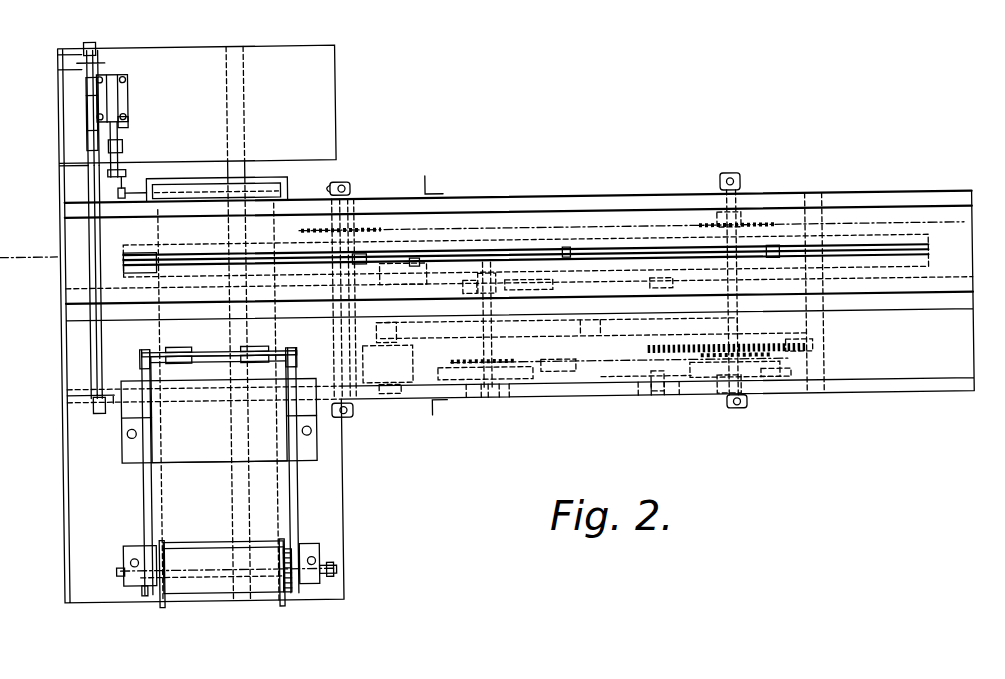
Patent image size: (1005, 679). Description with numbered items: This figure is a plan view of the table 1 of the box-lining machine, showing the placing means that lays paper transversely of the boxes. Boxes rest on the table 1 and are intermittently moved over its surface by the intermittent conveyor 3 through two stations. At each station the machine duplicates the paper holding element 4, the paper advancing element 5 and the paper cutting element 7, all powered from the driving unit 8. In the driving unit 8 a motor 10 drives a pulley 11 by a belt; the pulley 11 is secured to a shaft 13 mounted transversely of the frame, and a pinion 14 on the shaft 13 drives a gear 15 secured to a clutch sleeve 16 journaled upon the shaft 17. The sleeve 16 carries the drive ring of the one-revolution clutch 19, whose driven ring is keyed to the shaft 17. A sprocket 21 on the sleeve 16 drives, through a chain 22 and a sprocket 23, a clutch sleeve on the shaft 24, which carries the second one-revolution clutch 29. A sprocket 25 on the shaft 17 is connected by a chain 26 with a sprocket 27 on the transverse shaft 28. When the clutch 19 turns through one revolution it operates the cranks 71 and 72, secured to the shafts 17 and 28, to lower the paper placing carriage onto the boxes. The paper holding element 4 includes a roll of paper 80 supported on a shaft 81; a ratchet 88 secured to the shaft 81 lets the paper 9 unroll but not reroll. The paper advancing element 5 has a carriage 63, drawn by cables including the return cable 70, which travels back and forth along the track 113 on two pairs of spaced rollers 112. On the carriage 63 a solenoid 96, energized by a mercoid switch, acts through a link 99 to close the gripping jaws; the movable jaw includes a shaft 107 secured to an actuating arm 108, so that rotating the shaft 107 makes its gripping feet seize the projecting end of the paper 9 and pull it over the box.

The table 1 is at (901, 197).
The intermittent conveyor 3 is at (834, 252).
The paper holding element 4 is at (216, 583).
The paper advancing element 5 is at (131, 126).
The paper cutting element 7 is at (214, 351).
The driving unit 8 is at (782, 371).
The paper 9 is at (160, 487).
The motor 10 is at (382, 401).
The pulley 11 is at (603, 337).
The shaft 13 is at (655, 368).
The pinion 14 is at (648, 348).
The gear 15 is at (792, 345).
The clutch sleeve 16 is at (742, 345).
The shaft 17 is at (723, 372).
The clutch 19 is at (777, 380).
The sprocket 21 is at (792, 351).
The chain 22 is at (573, 363).
The sprocket 23 is at (452, 364).
The shaft 24 is at (496, 347).
The sprocket 25 is at (770, 220).
The chain 26 is at (610, 225).
The sprocket 27 is at (376, 224).
The shaft 28 is at (340, 335).
The clutch 29 is at (527, 380).
The carriage 63 is at (84, 105).
The return cable 70 is at (93, 270).
The crank 71 is at (725, 182).
The crank 72 is at (358, 434).
The roll of paper 80 is at (276, 594).
The paper shaft 81 is at (338, 571).
The ratchet 88 is at (291, 585).
The solenoid 96 is at (118, 100).
The link 99 is at (122, 160).
The shaft 107 is at (134, 194).
The actuating arm 108 is at (118, 190).
The rollers 112 is at (84, 80).
The track 113 is at (88, 233).